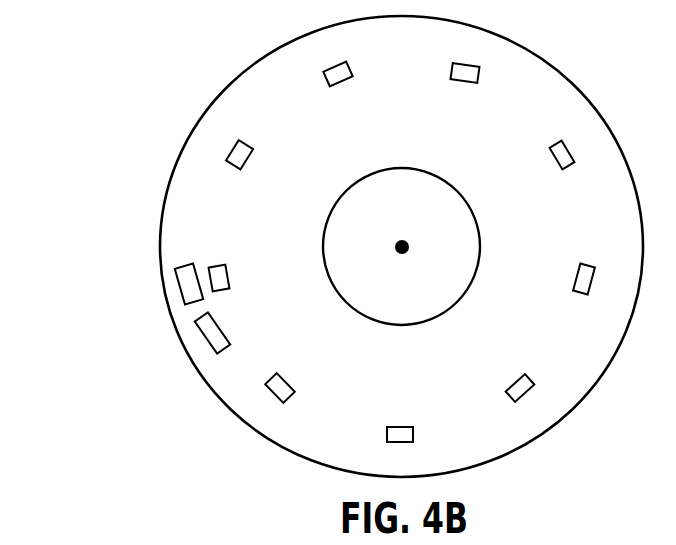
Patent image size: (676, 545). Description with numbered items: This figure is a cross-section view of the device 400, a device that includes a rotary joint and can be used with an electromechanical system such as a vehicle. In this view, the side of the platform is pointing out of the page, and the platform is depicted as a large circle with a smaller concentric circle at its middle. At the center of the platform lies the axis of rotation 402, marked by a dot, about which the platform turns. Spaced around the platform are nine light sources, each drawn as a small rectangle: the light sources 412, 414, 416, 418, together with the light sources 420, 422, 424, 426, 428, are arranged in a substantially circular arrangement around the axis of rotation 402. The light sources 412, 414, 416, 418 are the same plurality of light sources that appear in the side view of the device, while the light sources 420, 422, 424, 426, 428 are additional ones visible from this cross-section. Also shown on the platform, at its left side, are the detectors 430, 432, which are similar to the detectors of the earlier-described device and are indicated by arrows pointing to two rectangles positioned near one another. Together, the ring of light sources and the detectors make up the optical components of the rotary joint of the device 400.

The device 400 is at (62, 78).
The axis of rotation 402 is at (396, 245).
The light source 412 is at (250, 160).
The light source 414 is at (230, 277).
The light source 416 is at (284, 377).
The light source 418 is at (387, 435).
The light source 420 is at (506, 391).
The light source 422 is at (574, 287).
The light source 424 is at (551, 147).
The light source 426 is at (452, 65).
The light source 428 is at (343, 78).
The detector 430 is at (189, 293).
The detector 432 is at (211, 338).